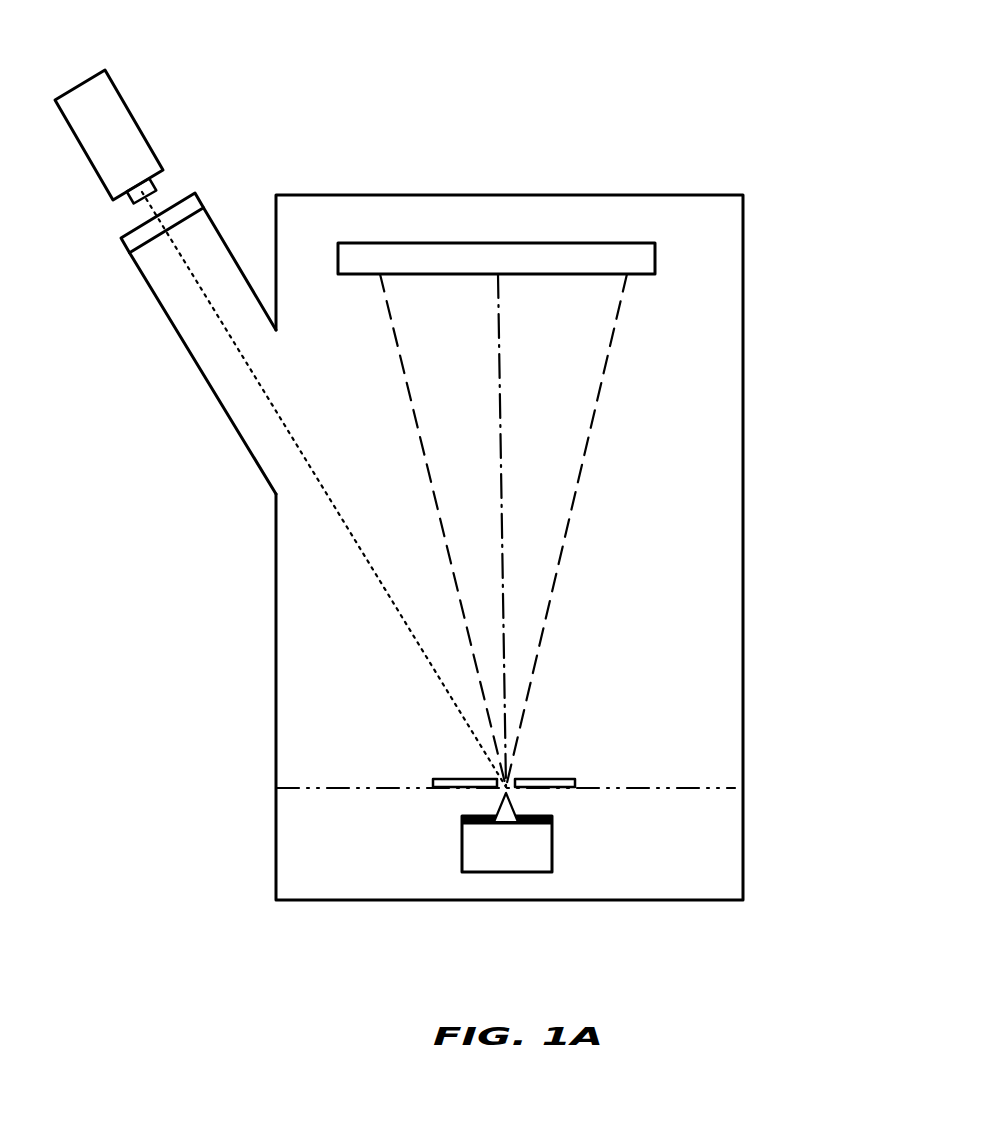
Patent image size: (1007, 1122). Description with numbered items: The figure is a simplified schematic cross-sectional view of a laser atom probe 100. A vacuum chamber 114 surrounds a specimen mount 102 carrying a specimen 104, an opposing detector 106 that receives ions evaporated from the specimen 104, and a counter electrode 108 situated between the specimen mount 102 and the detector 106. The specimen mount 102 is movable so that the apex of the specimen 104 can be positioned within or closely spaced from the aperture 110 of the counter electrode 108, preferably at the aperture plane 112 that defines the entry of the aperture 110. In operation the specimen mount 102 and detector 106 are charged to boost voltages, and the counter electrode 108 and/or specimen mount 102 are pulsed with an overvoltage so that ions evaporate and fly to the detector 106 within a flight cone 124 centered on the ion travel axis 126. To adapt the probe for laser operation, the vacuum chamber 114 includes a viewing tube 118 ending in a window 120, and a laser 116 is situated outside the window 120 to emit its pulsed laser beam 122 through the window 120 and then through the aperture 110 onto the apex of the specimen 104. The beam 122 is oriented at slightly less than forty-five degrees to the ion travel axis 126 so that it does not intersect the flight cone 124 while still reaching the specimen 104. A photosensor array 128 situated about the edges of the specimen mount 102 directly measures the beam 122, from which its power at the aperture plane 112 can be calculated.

The laser atom probe 100 is at (717, 141).
The specimen mount 102 is at (552, 850).
The specimen 104 is at (517, 807).
The detector 106 is at (655, 258).
The counter electrode 108 is at (557, 779).
The aperture 110 is at (509, 776).
The aperture plane 112 is at (345, 787).
The vacuum chamber 114 is at (743, 440).
The laser 116 is at (143, 130).
The viewing tube 118 is at (161, 306).
The window 120 is at (125, 235).
The laser beam 122 is at (260, 380).
The flight cone 124 is at (578, 497).
The ion travel axis 126 is at (498, 415).
The photosensor array 128 is at (462, 816).